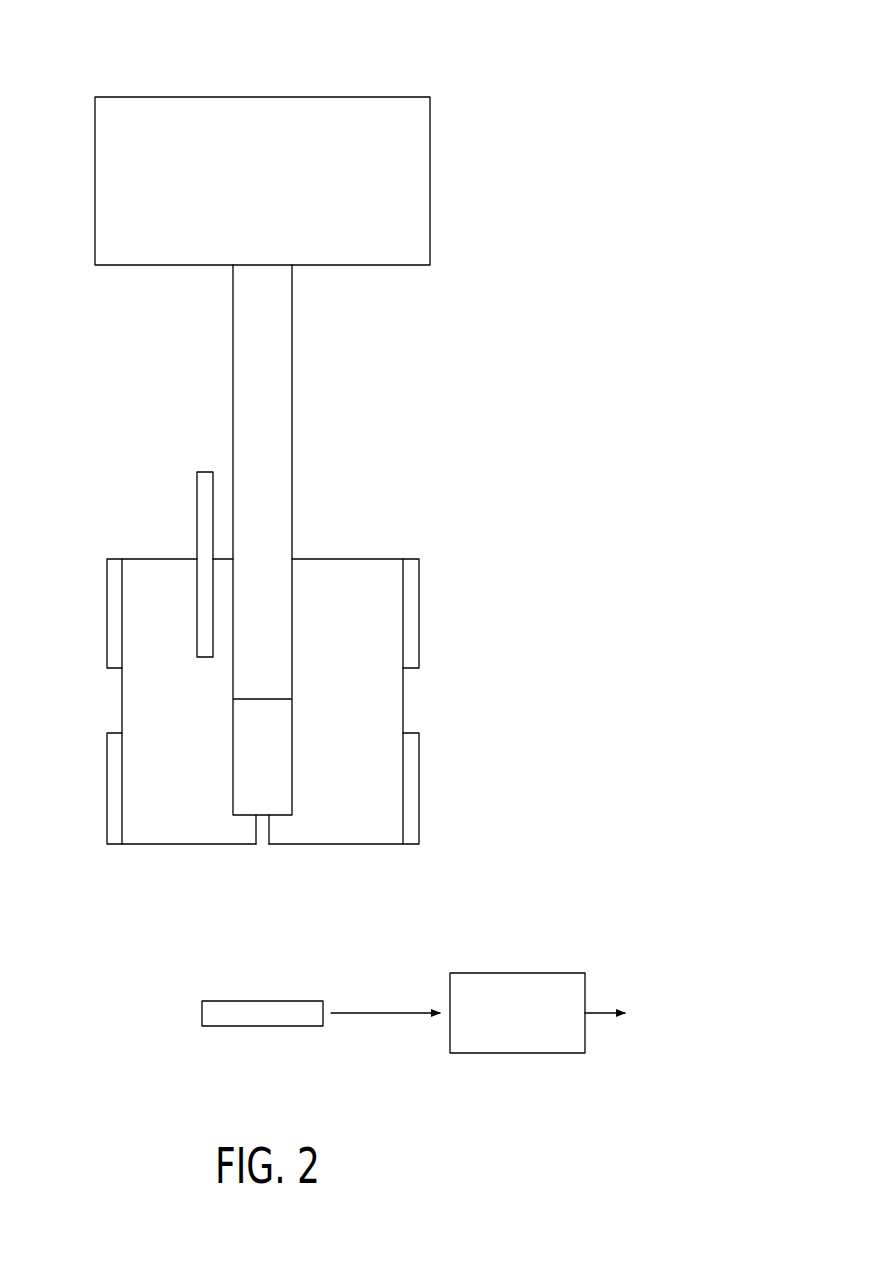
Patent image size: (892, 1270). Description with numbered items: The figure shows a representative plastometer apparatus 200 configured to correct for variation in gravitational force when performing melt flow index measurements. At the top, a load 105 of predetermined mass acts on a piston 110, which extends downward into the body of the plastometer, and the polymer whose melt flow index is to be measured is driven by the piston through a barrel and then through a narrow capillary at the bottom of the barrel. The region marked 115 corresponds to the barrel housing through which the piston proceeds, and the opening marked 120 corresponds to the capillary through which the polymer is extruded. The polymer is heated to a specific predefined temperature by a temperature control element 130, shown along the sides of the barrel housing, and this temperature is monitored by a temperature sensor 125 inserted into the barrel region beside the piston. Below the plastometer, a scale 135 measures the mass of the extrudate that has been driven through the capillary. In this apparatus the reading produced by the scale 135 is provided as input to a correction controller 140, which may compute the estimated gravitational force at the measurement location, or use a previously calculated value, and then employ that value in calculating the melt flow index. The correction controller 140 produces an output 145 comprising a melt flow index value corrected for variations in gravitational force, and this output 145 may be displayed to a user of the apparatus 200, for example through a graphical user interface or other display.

The apparatus 200 is at (574, 95).
The load 105 is at (430, 186).
The piston 110 is at (292, 357).
The housing 115 is at (393, 707).
The nozzle opening 120 is at (259, 851).
The temperature sensor 125 is at (203, 472).
The temperature control element 130 is at (107, 635).
The scale 135 is at (258, 1026).
The correction controller 140 is at (517, 1053).
The output 145 is at (668, 1043).